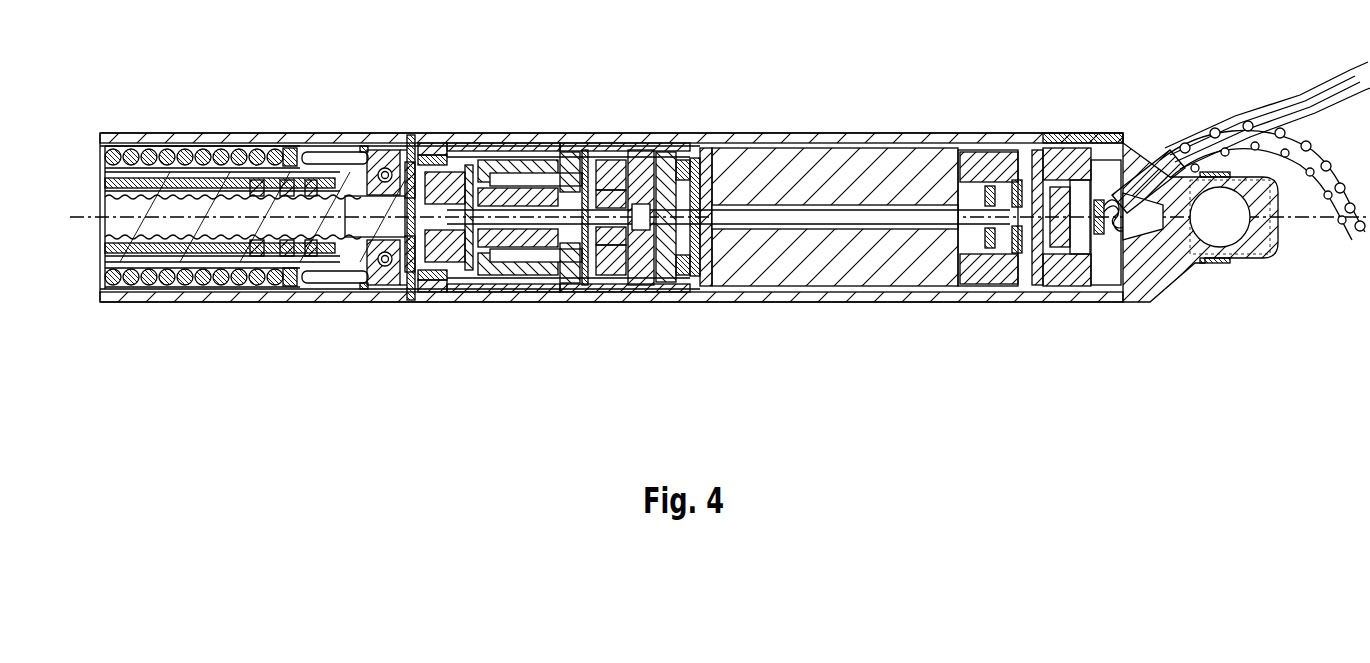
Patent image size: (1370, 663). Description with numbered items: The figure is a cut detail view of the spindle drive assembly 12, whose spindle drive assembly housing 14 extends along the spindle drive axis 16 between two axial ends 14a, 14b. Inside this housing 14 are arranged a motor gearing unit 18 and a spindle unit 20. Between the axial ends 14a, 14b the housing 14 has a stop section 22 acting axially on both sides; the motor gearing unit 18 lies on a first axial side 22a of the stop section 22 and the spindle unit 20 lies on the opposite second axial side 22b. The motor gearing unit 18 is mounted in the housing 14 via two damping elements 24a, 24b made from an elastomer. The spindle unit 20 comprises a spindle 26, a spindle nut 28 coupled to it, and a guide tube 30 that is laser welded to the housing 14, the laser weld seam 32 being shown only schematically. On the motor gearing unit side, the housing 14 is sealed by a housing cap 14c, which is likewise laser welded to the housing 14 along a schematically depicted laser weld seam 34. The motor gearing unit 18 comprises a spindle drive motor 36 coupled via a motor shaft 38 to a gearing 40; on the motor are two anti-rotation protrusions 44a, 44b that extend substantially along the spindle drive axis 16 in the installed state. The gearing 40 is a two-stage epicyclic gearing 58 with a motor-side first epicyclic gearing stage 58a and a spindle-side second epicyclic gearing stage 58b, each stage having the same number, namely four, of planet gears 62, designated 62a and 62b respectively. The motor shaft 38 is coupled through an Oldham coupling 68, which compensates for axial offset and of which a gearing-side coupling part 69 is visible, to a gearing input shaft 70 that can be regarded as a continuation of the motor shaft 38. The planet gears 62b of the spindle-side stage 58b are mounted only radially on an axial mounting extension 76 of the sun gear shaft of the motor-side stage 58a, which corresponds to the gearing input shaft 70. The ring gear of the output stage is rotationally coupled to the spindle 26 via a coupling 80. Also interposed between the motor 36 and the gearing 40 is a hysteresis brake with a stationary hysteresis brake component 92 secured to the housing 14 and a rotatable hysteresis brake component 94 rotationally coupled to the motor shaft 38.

The spindle drive assembly 12 is at (650, 108).
The spindle drive assembly housing 14 is at (745, 297).
The axial end 14a is at (105, 122).
The axial end 14b is at (1093, 138).
The housing cap 14c is at (1165, 255).
The spindle drive axis 16 is at (80, 214).
The motor gearing unit 18 is at (843, 103).
The spindle unit 20 is at (252, 195).
The stop section 22 is at (384, 242).
The first axial side 22a is at (430, 301).
The second axial side 22b is at (388, 135).
The damping element 24a is at (425, 140).
The damping element 24b is at (1080, 274).
The spindle 26 is at (143, 225).
The spindle nut 28 is at (305, 248).
The guide tube 30 is at (245, 160).
The laser weld seam 32 is at (364, 293).
The laser weld seam 34 is at (1110, 282).
The spindle drive motor 36 is at (835, 217).
The motor shaft 38 is at (745, 210).
The gearing 40 is at (576, 220).
The anti-rotation protrusion 44a is at (1050, 282).
The anti-rotation protrusion 44b is at (1060, 148).
The two-stage epicyclic gearing 58 is at (576, 220).
The first epicyclic gearing stage 58a is at (580, 128).
The second epicyclic gearing stage 58b is at (475, 130).
The planet gear 62 is at (547, 217).
The planet gear 62a is at (540, 160).
The planet gear 62b is at (515, 280).
The coupling 68 is at (672, 130).
The gearing-side coupling part 69 is at (620, 180).
The gearing input shaft 70 is at (587, 270).
The axial mounting extension 76 is at (505, 205).
The coupling 80 is at (436, 130).
The stationary hysteresis brake component 92 is at (662, 262).
The rotatable hysteresis brake component 94 is at (647, 266).